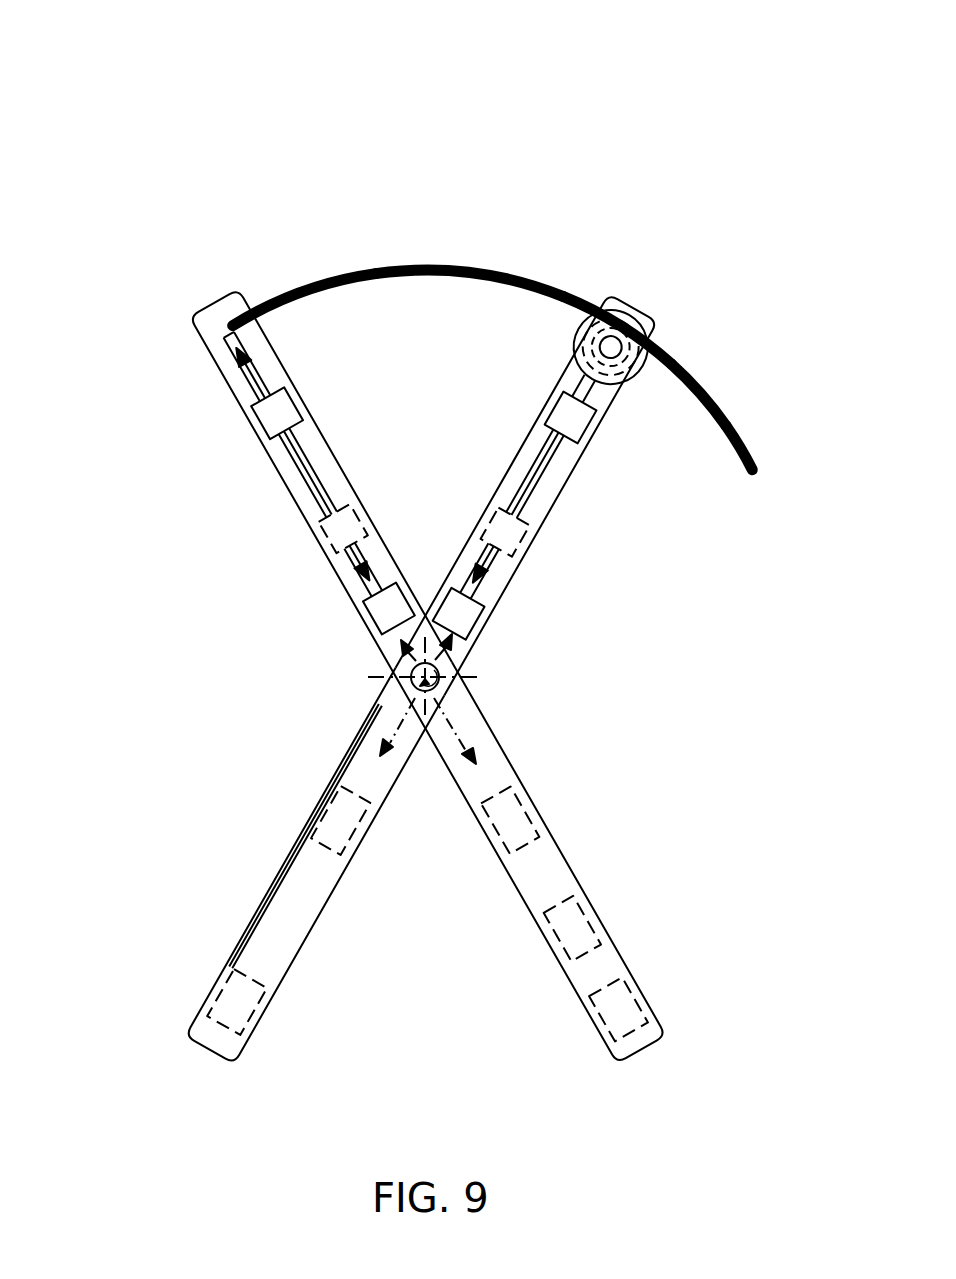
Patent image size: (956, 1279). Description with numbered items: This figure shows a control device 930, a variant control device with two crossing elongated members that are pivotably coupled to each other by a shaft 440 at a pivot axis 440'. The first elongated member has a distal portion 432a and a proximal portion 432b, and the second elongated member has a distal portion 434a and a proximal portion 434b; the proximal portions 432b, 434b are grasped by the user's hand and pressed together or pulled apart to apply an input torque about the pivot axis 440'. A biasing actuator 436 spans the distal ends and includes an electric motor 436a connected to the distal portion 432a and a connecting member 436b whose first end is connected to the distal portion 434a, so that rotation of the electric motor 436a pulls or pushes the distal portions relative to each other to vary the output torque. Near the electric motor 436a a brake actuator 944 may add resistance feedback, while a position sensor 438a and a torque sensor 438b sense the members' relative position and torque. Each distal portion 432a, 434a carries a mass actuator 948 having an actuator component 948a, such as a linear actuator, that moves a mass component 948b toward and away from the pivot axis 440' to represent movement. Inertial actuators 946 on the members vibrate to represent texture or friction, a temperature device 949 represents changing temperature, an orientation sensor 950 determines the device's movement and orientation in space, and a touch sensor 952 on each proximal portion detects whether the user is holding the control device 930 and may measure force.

The control device 930 is at (280, 110).
The biasing actuator 436 is at (700, 228).
The electric motor 436a is at (640, 310).
The connecting member 436b is at (352, 262).
The position sensor 438a is at (695, 380).
The torque sensor 438b is at (618, 383).
The brake actuator 944 is at (663, 318).
The distal portion of the first elongated member 432a is at (537, 545).
The proximal portion of the first elongated member 432b is at (222, 984).
The distal portion of the second elongated member 434a is at (197, 332).
The proximal portion of the second elongated member 434b is at (603, 924).
The mass actuator 948 is at (536, 395).
The actuator component 948a is at (362, 618).
The mass component 948b is at (250, 413).
The shaft 440 is at (494, 699).
The pivot axis 440' is at (514, 651).
The temperature device 949 is at (292, 857).
The inertial actuator 946 is at (353, 836).
The orientation sensor 950 is at (566, 952).
The touch sensor 952 is at (245, 1022).